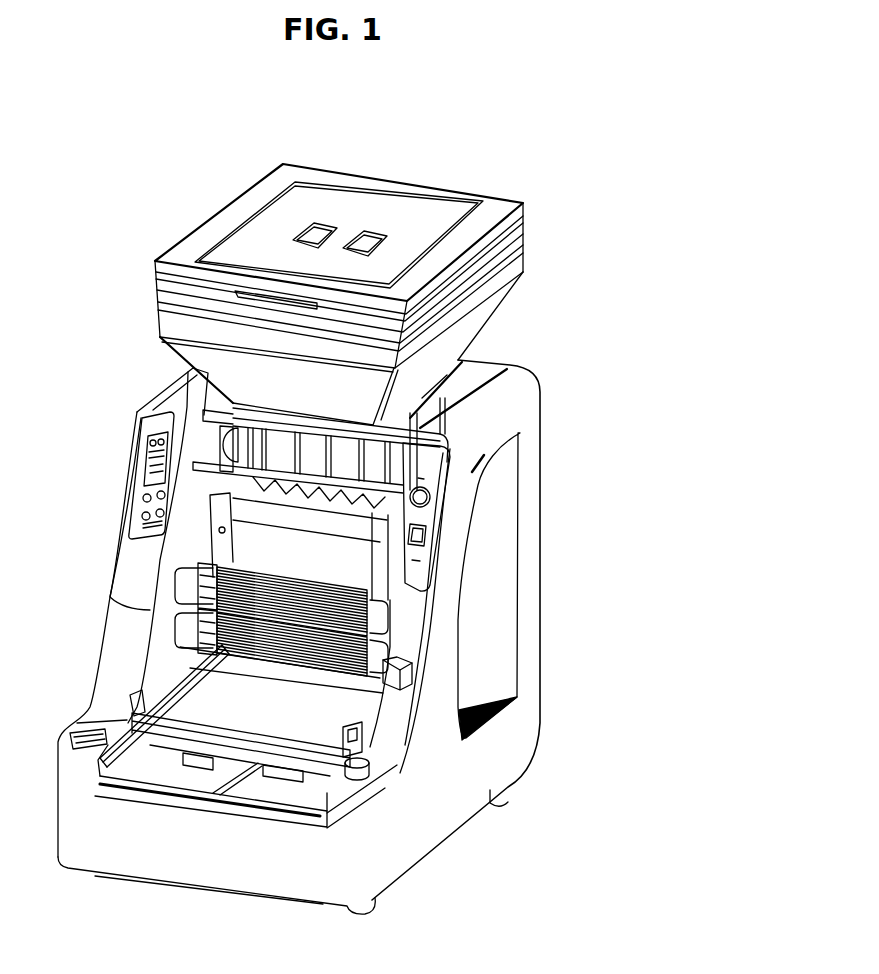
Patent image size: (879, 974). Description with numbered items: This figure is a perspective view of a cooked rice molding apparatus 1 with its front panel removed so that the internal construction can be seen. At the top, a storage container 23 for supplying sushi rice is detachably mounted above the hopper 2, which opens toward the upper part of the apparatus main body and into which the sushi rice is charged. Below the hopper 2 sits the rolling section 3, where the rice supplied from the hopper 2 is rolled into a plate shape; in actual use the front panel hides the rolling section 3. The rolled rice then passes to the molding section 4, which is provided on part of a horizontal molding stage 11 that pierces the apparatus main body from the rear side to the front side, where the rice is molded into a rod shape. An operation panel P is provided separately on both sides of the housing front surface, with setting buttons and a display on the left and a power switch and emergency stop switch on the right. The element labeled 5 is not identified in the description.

The cooked rice molding apparatus 1 is at (620, 427).
The hopper 2 is at (140, 298).
The storage container 23 is at (483, 316).
The rolling section 3 is at (171, 606).
The molding section 4 is at (120, 702).
The guide rail 5 is at (178, 710).
The molding stage 11 is at (177, 769).
The operation panel P is at (125, 465).